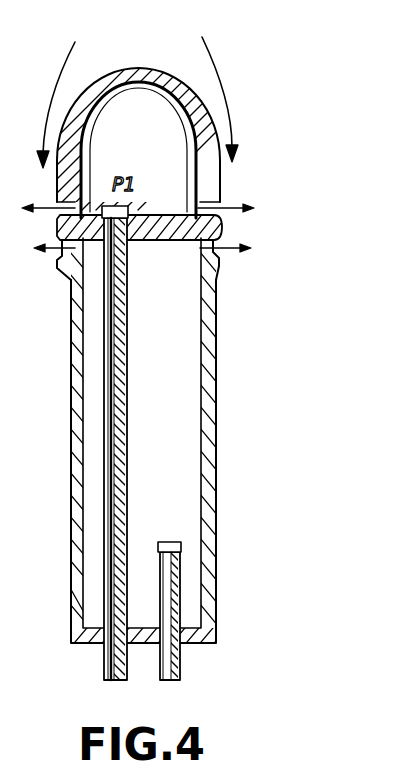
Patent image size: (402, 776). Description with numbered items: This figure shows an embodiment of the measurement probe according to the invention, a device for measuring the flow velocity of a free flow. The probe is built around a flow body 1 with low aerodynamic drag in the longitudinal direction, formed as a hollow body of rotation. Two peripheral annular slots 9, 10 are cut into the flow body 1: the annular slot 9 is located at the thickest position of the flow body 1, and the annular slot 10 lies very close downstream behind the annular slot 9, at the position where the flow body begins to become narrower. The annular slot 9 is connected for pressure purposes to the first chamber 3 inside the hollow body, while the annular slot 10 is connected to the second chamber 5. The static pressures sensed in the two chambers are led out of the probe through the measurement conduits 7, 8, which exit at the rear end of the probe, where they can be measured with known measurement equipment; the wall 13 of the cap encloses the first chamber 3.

The flow body 1 is at (208, 184).
The first chamber 3 is at (163, 103).
The cap wall 13 is at (151, 76).
The annular slot 9 is at (220, 224).
The annular slot 10 is at (217, 261).
The second chamber 5 is at (183, 344).
The pressure conduit 7 is at (107, 666).
The pressure conduit 8 is at (178, 664).